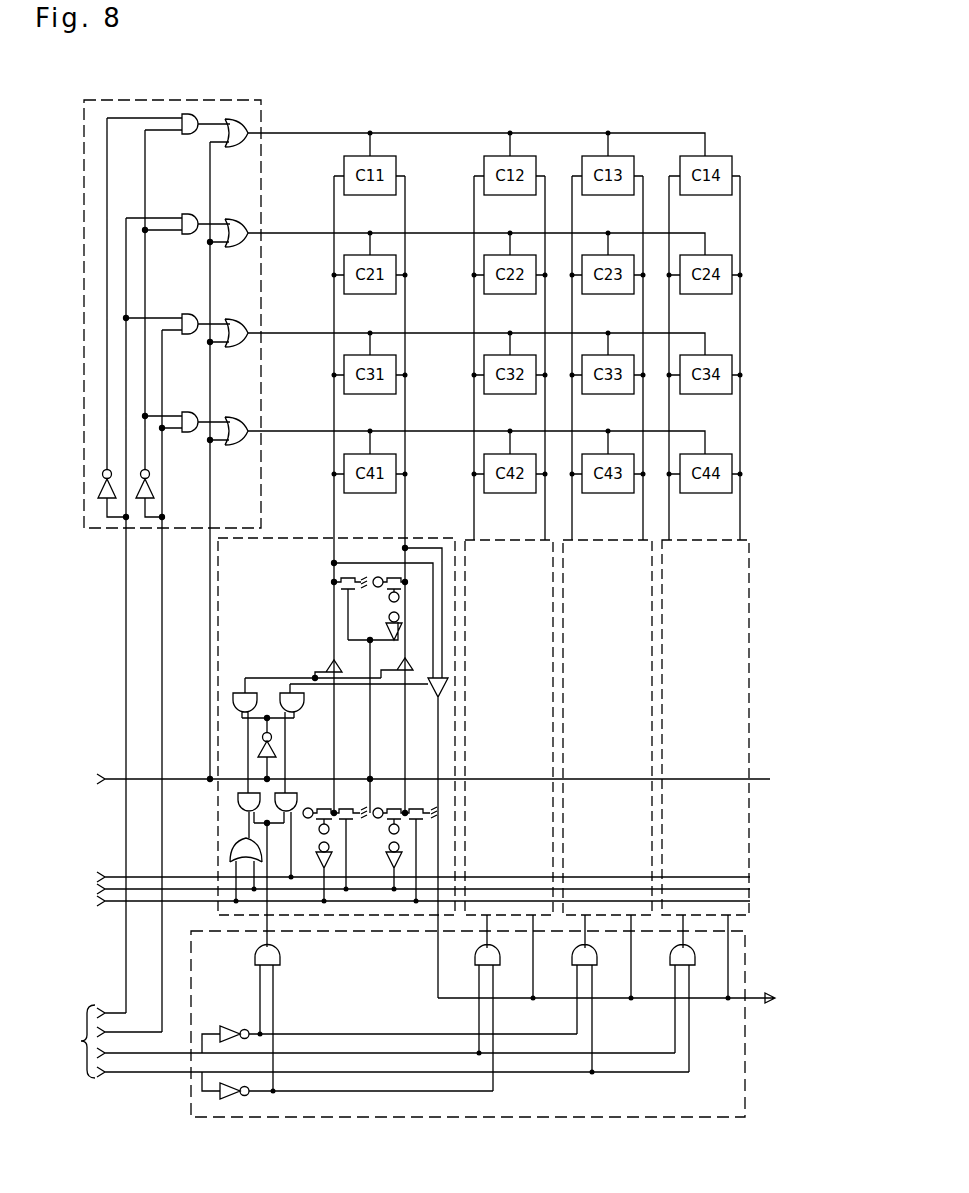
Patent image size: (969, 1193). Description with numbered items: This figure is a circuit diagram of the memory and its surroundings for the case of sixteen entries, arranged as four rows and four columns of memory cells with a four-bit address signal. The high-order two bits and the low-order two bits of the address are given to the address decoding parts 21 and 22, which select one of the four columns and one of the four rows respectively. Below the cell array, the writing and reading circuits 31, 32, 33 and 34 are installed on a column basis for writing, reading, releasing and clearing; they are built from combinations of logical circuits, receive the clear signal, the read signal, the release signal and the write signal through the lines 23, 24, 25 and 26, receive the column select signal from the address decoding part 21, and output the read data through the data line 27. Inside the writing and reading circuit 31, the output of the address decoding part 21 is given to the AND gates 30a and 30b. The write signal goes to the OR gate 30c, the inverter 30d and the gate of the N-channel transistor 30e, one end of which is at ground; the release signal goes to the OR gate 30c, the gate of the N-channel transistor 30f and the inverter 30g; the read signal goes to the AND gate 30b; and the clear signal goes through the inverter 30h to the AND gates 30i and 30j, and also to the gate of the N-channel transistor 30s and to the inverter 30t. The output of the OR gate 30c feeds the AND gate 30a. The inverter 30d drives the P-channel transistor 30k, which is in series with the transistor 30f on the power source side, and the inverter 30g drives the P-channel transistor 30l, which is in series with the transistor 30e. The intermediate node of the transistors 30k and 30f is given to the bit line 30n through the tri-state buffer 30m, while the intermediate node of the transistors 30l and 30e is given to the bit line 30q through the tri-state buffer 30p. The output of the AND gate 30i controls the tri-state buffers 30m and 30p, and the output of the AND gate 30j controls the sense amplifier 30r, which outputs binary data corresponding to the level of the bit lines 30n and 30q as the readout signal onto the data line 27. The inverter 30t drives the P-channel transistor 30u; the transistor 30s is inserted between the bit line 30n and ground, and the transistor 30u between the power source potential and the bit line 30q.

The address decoding part 21 is at (745, 1117).
The address decoding part 22 is at (235, 100).
The line 23 is at (170, 778).
The line 24 is at (170, 876).
The line 25 is at (184, 889).
The line 26 is at (197, 902).
The data line 27 is at (760, 992).
The AND gate 30a is at (238, 802).
The AND gate 30b is at (292, 792).
The OR gate 30c is at (235, 842).
The inverter 30d is at (330, 850).
The N-channel transistor 30e is at (425, 812).
The N-channel transistor 30f is at (378, 800).
The inverter 30g is at (392, 862).
The inverter 30h is at (275, 746).
The AND gate 30i is at (233, 690).
The AND gate 30j is at (298, 703).
The P-channel transistor 30k is at (322, 810).
The P-channel transistor 30l is at (400, 808).
The tri-state buffer 30m is at (330, 660).
The bit line 30n is at (333, 442).
The tri-state buffer 30p is at (413, 665).
The bit line 30q is at (405, 522).
The sense amplifier 30r is at (448, 690).
The N-channel transistor 30s is at (357, 548).
The inverter 30t is at (375, 614).
The P-channel transistor 30u is at (400, 548).
The writing and reading circuit 31 is at (298, 548).
The writing and reading circuit 32 is at (502, 548).
The writing and reading circuit 33 is at (603, 548).
The writing and reading circuit 34 is at (705, 548).